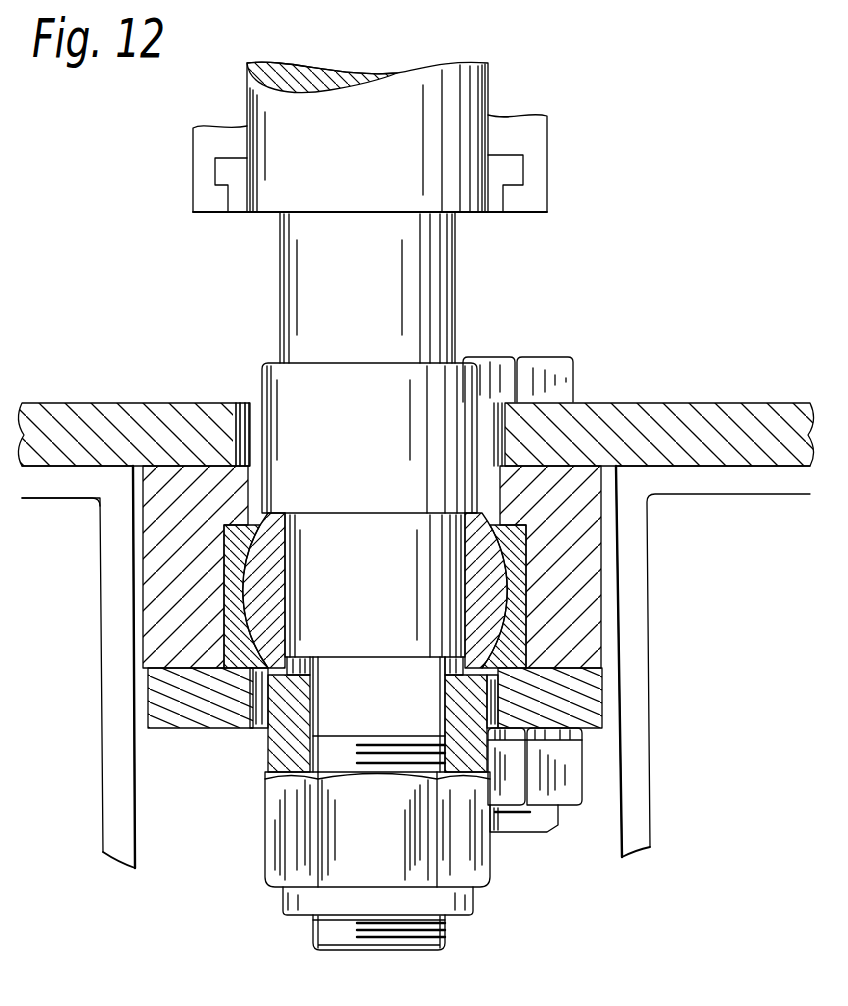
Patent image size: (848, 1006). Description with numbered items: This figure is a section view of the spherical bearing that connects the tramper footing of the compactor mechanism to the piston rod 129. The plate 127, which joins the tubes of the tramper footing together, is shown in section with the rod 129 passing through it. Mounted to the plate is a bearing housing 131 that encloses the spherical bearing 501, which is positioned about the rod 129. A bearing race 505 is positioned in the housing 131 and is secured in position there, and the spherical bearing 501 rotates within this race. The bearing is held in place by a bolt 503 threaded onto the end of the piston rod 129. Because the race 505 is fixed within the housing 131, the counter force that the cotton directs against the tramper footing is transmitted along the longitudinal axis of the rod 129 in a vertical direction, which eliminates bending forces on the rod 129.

The plate 127 is at (125, 403).
The piston rod 129 is at (455, 297).
The bearing housing 131 is at (617, 527).
The spherical bearing 501 is at (505, 622).
The bolt 503 is at (492, 878).
The bearing race 505 is at (517, 567).